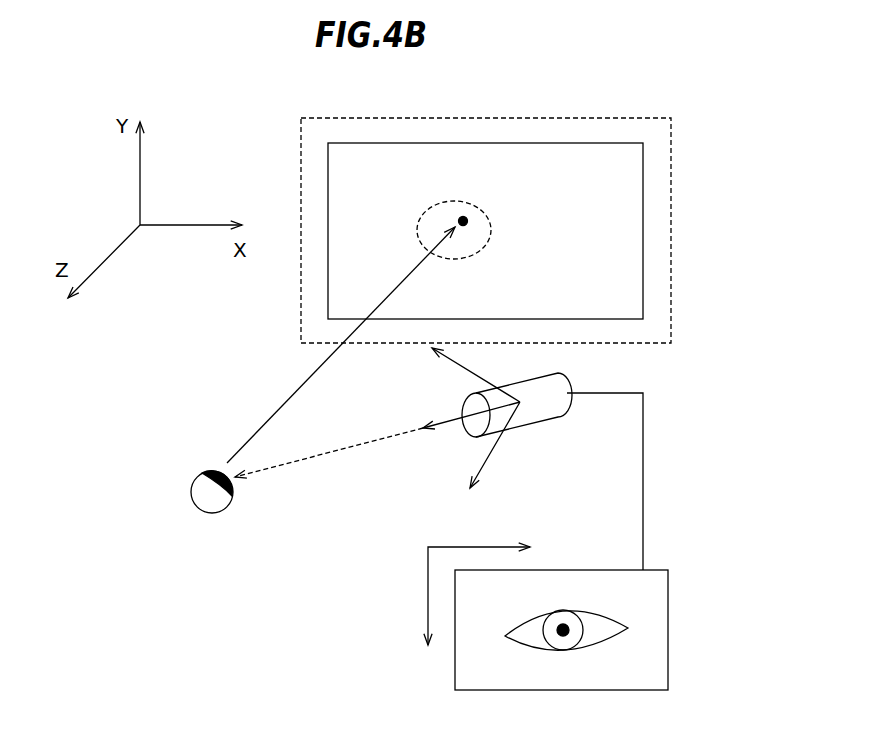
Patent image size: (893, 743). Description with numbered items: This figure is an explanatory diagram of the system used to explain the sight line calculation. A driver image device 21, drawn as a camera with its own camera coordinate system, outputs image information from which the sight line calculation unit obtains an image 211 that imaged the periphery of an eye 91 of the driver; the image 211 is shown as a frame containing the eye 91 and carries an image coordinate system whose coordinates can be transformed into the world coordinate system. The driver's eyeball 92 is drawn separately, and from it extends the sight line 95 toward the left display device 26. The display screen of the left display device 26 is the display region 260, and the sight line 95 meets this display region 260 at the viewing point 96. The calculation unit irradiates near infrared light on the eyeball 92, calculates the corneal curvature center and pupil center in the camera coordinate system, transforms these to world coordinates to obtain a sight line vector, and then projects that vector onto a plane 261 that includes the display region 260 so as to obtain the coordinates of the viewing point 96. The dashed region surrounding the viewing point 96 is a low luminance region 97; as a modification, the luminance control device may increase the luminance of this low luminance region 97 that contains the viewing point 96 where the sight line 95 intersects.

The plane 261 is at (542, 117).
The left display device 26 is at (644, 162).
The display region 260 is at (620, 212).
The viewing point 96 is at (462, 215).
The low luminance region 97 is at (462, 258).
The sight line 95 is at (280, 408).
The eyeball 92 is at (198, 486).
The driver image device 21 is at (553, 384).
The image 211 is at (643, 592).
The eye 91 is at (613, 640).